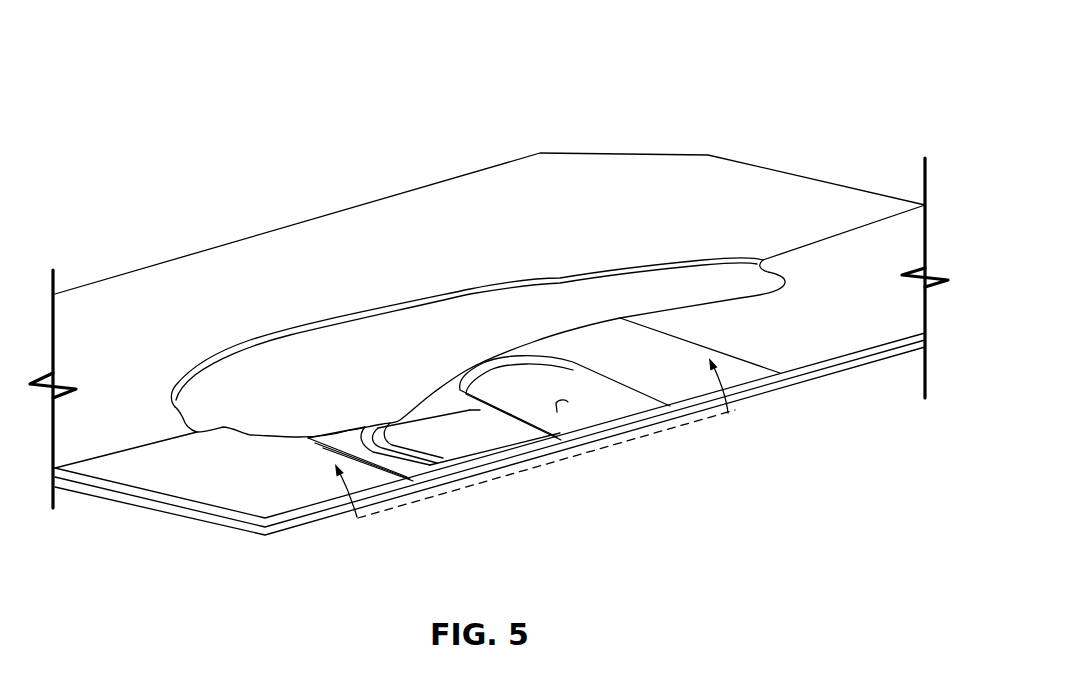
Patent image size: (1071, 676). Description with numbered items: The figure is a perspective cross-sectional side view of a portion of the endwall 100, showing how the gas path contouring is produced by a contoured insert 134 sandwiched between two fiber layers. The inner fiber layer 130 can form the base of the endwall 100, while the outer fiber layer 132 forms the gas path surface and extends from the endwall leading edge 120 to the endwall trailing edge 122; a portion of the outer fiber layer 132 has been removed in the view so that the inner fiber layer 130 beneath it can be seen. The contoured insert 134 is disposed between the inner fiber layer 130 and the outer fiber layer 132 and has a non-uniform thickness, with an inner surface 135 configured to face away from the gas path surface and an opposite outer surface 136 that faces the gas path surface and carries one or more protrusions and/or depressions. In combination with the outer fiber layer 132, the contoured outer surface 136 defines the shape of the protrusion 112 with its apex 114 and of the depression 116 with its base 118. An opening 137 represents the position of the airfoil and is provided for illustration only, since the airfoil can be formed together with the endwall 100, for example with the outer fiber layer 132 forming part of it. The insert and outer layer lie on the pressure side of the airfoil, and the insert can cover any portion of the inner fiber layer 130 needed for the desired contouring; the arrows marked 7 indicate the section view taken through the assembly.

The endwall 100 is at (781, 88).
The inner fiber layer 130 is at (762, 200).
The endwall trailing edge 122 is at (888, 195).
The opening 137 is at (350, 324).
The endwall leading edge 120 is at (147, 510).
The outer fiber layer 132 is at (209, 470).
The protrusion 112 is at (353, 432).
The apex 114 is at (456, 428).
The depression 116 is at (577, 387).
The base 118 is at (557, 412).
The outer surface 136 is at (481, 430).
The contoured insert 134 is at (488, 462).
The inner surface 135 is at (310, 528).
The section line of FIG. 7 is at (522, 432).